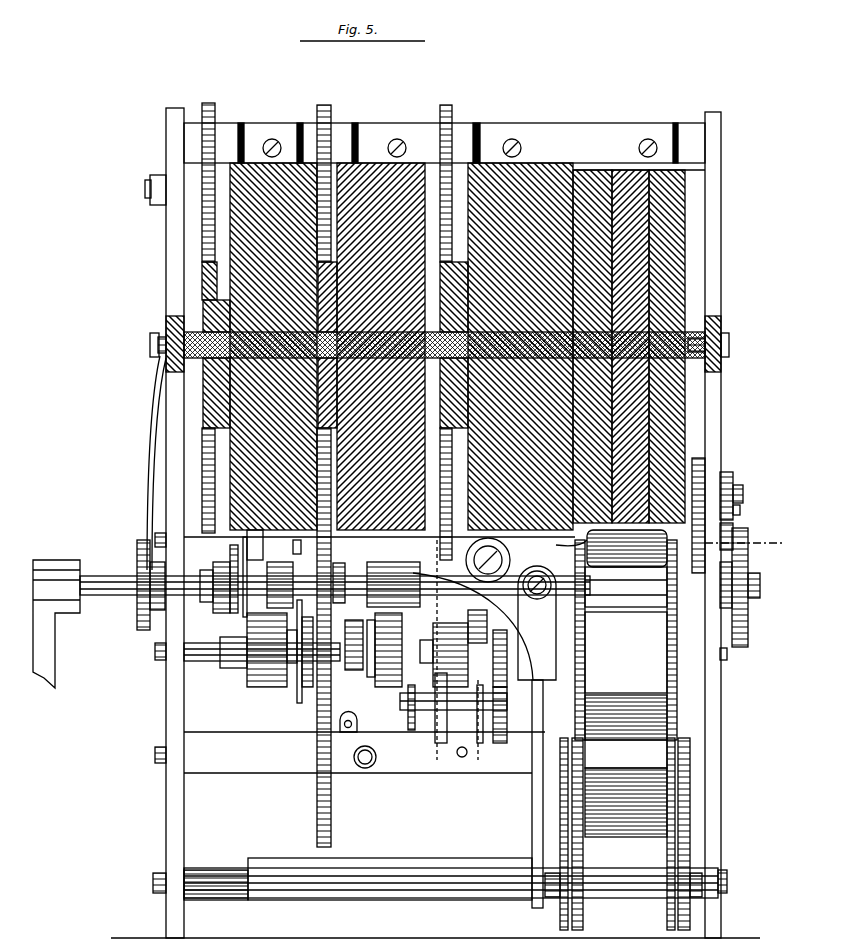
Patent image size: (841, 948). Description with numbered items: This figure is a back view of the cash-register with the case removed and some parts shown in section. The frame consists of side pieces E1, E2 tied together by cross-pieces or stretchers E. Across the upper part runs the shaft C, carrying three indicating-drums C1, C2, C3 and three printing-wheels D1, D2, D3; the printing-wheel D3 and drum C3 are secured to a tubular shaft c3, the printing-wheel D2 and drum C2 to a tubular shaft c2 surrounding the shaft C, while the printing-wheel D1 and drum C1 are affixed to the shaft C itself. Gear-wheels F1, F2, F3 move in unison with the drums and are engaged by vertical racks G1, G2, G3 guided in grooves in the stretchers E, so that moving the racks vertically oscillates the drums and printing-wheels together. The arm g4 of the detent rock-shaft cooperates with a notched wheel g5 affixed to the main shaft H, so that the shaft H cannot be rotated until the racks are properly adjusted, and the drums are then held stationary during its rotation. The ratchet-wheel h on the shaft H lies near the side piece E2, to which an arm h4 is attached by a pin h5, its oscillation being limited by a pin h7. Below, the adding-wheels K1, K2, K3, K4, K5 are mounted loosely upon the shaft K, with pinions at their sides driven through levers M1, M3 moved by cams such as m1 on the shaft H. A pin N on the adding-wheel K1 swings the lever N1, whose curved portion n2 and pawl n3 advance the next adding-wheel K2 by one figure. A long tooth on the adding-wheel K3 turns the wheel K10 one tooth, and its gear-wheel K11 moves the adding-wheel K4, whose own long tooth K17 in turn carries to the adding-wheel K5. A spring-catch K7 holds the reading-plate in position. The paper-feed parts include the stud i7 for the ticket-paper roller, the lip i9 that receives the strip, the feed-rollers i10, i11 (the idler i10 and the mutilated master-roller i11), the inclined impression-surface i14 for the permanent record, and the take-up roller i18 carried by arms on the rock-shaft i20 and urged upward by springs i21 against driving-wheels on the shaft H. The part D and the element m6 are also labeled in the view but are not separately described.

The cross-pieces or stretchers E is at (184, 147).
The side piece E1 is at (166, 239).
The side piece E2 is at (721, 249).
The rack G1 is at (208, 103).
The rack G2 is at (325, 105).
The rack G3 is at (446, 105).
The indicating-drum C1 is at (255, 163).
The indicating-drum C2 is at (378, 163).
The indicating-drum C3 is at (528, 163).
The printing-wheel D1 is at (666, 170).
The printing-wheel D2 is at (632, 170).
The printing-wheel D3 is at (594, 170).
The gear-wheel F1 is at (202, 283).
The gear-wheel F2 is at (260, 346).
The gear-wheel F3 is at (409, 275).
The tubular shaft c2 is at (361, 307).
The tubular shaft c3 is at (514, 307).
The shaft C is at (166, 326).
The arm g4 is at (148, 436).
The notched wheel g5 is at (137, 628).
The lever M1 is at (335, 573).
The cam m1 is at (219, 576).
The lever N1 is at (291, 574).
The shaft K is at (262, 663).
The adding-wheel K1 is at (270, 680).
The pin or tooth N is at (294, 651).
The adding-wheel K2 is at (316, 688).
The curved portion n2 is at (348, 605).
The gear m6 is at (403, 581).
The pawl n3 is at (393, 650).
The adding-wheel K4 is at (444, 644).
The long tooth K17 is at (487, 648).
The wheel K10 is at (453, 703).
The gear-wheel K11 is at (468, 650).
The adding-wheel K3 is at (385, 719).
The spring-catch K7 is at (347, 733).
The stud i7 is at (376, 757).
The lever M3 is at (473, 623).
The idler roller i10 is at (481, 560).
The adding-wheel K5 is at (526, 737).
The master-roller i11 is at (518, 587).
The lip i9 is at (611, 568).
The frame box D is at (626, 640).
The roller i18 is at (626, 788).
The impression-surface i14 is at (720, 797).
The rock-shaft i20 is at (451, 872).
The springs i21 is at (705, 900).
The ratchet-wheel h is at (733, 527).
The arm h4 is at (730, 472).
The pin or screw h5 is at (746, 486).
The pin h7 is at (740, 511).
The main shaft H is at (760, 582).